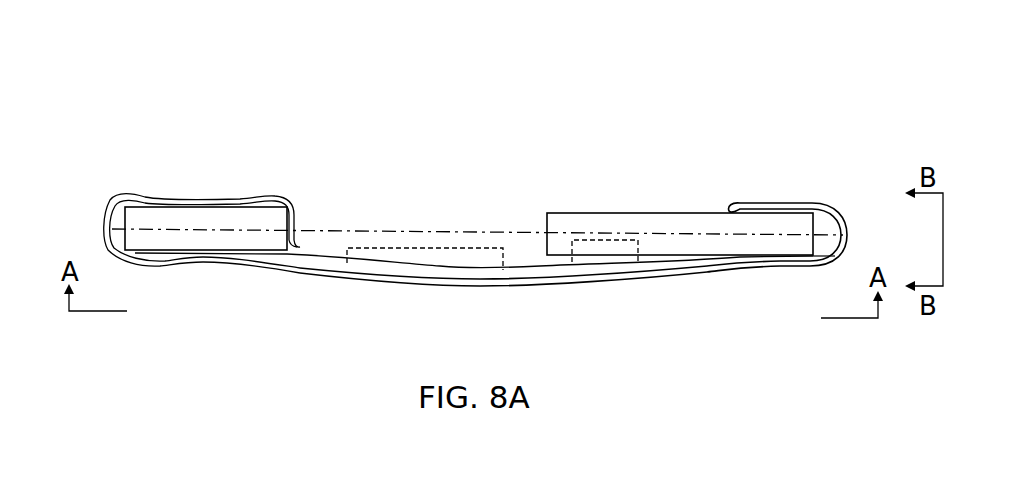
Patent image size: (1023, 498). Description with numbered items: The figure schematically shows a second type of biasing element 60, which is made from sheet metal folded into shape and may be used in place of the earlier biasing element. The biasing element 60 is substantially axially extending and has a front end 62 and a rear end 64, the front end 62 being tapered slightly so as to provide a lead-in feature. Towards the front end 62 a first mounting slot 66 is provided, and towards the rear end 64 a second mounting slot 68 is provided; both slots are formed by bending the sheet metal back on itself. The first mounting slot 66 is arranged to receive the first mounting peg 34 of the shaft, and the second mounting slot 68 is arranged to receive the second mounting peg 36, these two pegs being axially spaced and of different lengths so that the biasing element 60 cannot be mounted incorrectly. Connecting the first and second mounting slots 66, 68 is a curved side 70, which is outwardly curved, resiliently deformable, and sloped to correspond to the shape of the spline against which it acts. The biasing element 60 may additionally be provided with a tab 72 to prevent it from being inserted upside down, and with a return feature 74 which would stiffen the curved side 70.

The biasing element 60 is at (890, 125).
The first mounting peg 34 is at (587, 222).
The second mounting peg 36 is at (257, 220).
The front end 62 is at (827, 208).
The rear end 64 is at (114, 208).
The first mounting slot 66 is at (846, 230).
The second mounting slot 68 is at (115, 220).
The curved side 70 is at (435, 276).
The tab 72 is at (623, 248).
The return feature 74 is at (398, 247).